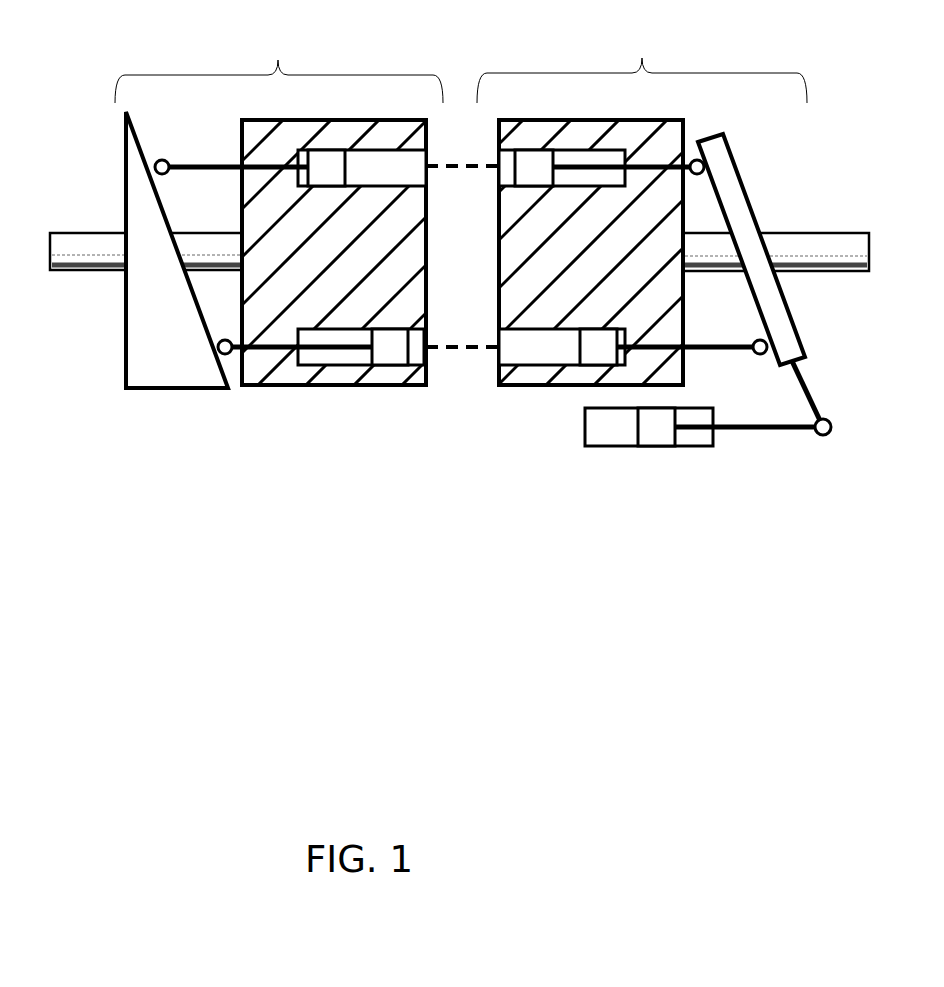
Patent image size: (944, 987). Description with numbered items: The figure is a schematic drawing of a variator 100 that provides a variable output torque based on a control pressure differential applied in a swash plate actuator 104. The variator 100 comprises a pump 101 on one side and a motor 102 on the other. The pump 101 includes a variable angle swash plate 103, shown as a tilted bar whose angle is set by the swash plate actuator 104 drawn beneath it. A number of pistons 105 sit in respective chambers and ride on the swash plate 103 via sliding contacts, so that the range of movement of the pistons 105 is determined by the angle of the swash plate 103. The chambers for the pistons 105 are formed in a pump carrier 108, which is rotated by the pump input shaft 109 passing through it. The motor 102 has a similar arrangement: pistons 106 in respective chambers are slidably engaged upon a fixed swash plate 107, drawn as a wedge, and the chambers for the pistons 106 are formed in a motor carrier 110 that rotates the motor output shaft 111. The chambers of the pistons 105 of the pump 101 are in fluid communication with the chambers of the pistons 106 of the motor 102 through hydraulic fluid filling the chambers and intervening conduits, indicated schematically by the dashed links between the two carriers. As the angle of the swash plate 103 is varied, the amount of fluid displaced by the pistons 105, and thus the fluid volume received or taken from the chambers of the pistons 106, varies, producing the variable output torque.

The variator 100 is at (472, 335).
The pump 101 is at (472, 245).
The motor 102 is at (472, 246).
The variable angle swash plate 103 is at (775, 307).
The swash plate actuator 104 is at (666, 455).
The pistons 105 is at (540, 178).
The pistons 106 is at (390, 335).
The fixed swash plate 107 is at (185, 380).
The pump carrier 108 is at (532, 380).
The pump input shaft 109 is at (837, 248).
The motor carrier 110 is at (383, 380).
The motor output shaft 111 is at (65, 242).